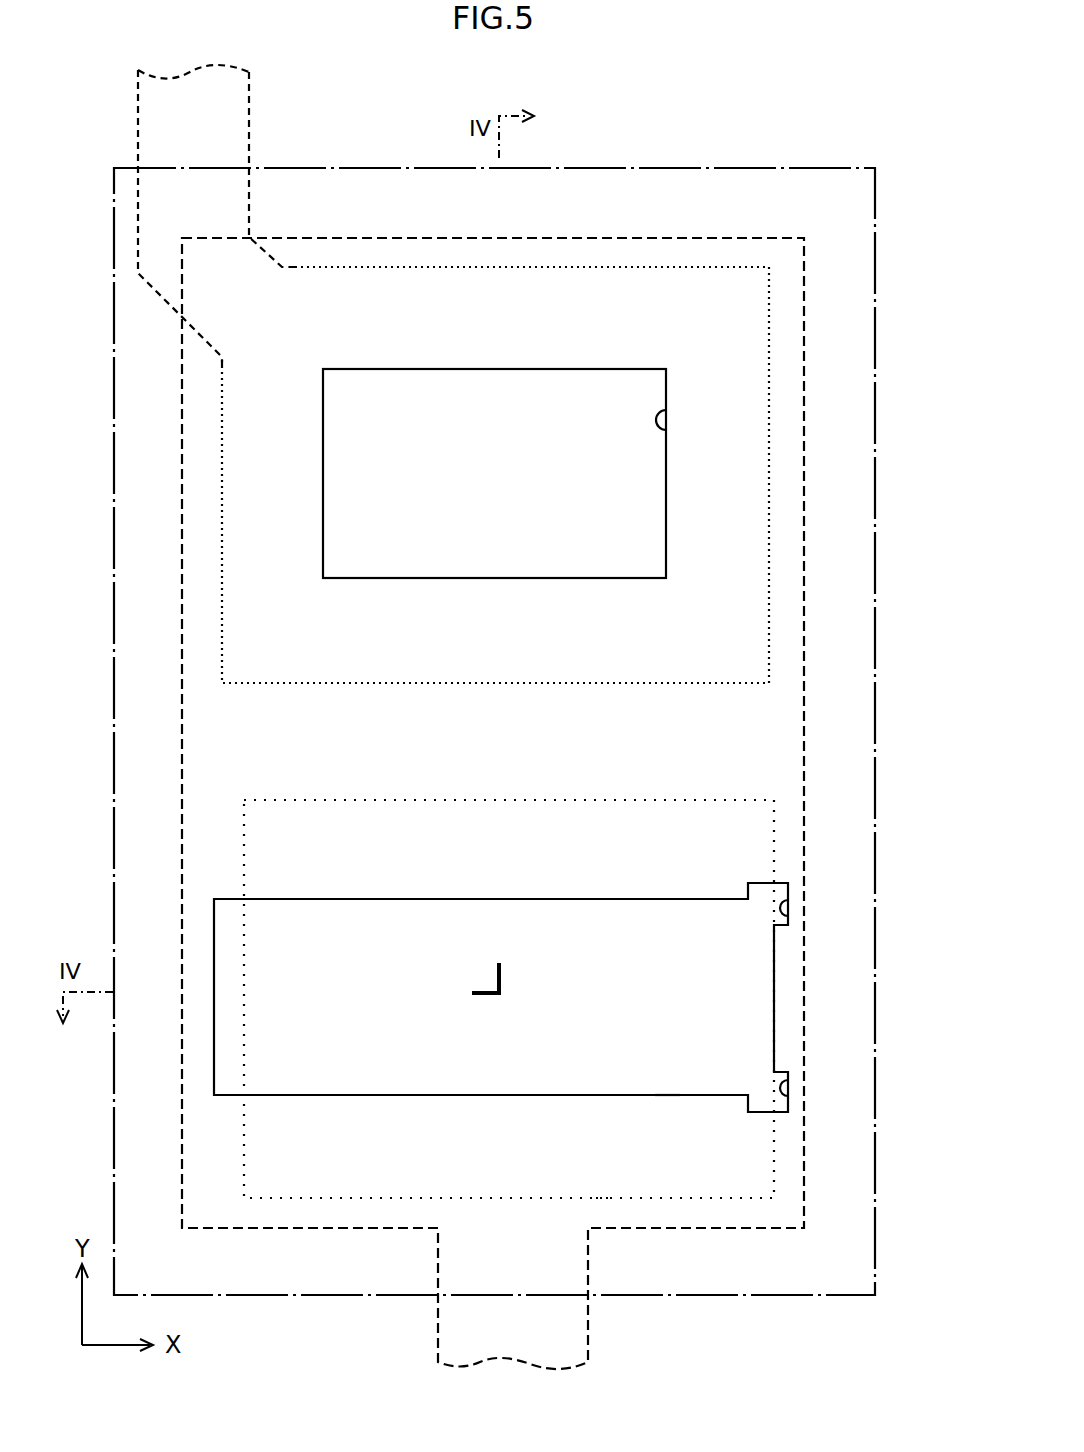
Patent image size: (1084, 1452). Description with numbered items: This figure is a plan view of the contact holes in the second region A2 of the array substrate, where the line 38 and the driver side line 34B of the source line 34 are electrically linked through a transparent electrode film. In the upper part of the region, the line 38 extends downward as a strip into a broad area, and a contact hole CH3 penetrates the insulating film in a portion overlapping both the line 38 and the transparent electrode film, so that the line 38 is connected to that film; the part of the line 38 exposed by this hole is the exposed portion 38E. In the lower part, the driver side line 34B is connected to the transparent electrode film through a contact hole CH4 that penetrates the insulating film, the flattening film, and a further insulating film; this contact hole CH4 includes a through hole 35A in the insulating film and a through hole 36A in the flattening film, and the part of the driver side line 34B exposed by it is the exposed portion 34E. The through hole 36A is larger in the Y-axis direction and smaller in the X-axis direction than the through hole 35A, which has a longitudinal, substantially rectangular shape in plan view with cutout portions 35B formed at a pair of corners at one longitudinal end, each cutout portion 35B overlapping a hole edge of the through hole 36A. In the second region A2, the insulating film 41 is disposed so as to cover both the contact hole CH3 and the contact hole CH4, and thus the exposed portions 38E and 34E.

The second region A2 is at (738, 200).
The insulating film 41 is at (853, 226).
The line 38 is at (748, 313).
The exposed portion 38E is at (640, 502).
The contact hole CH3 is at (663, 411).
The source line 34 is at (591, 957).
The driver side line 34B is at (765, 725).
The exposed portion 34E is at (742, 995).
The cutout portions 35B is at (781, 903).
The through hole 35A is at (666, 1096).
The through hole 36A is at (605, 1199).
The contact hole CH4 is at (683, 1234).